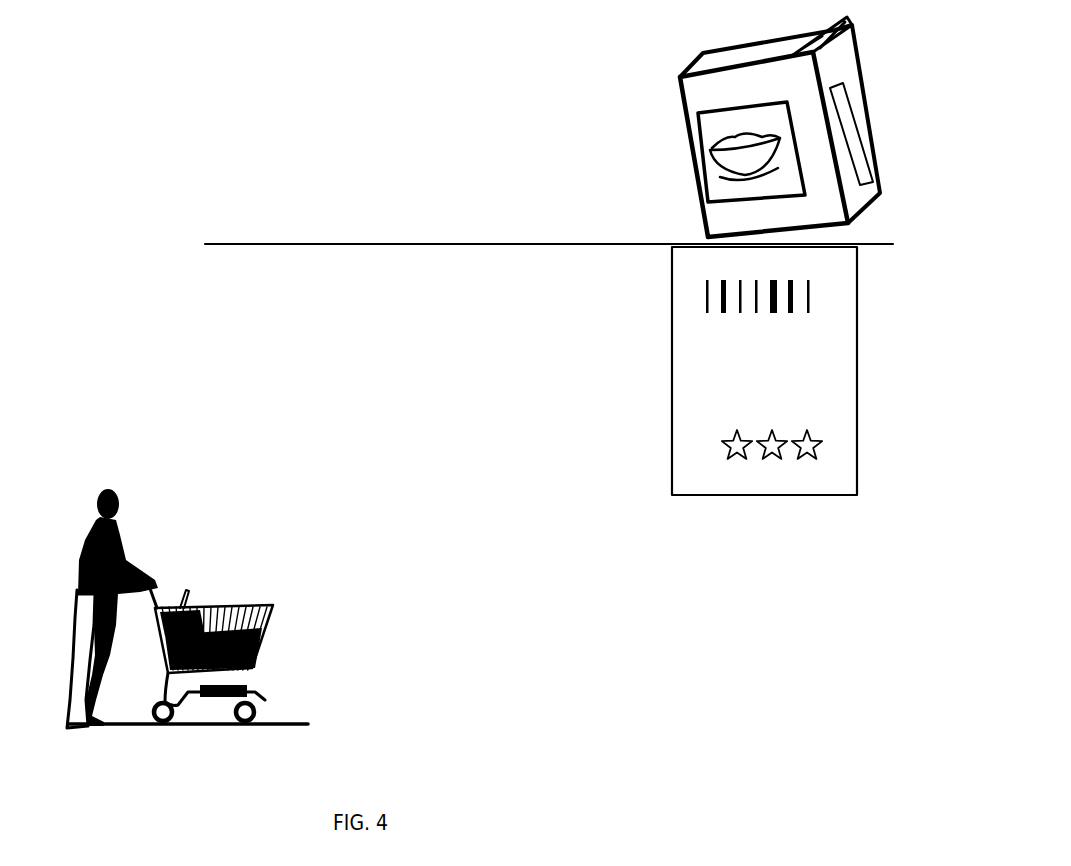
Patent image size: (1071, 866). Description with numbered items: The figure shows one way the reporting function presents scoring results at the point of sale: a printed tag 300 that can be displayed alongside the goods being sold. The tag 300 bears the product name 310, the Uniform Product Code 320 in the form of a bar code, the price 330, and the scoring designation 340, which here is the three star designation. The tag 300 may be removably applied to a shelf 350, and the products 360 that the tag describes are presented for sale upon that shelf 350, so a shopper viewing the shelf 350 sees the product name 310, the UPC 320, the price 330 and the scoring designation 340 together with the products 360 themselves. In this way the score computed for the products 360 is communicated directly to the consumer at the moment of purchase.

The tag 300 is at (668, 278).
The product name 310 is at (688, 347).
The Uniform Product Code 320 is at (700, 298).
The price 330 is at (668, 393).
The scoring designation 340 is at (718, 445).
The shelf 350 is at (415, 243).
The products 360 is at (672, 130).